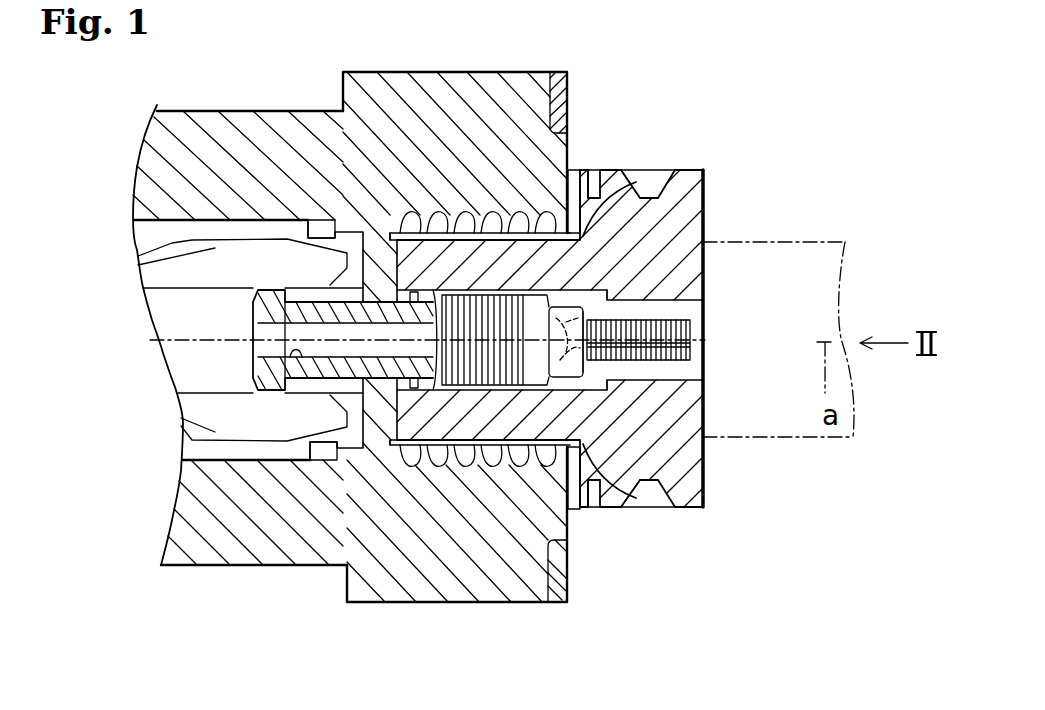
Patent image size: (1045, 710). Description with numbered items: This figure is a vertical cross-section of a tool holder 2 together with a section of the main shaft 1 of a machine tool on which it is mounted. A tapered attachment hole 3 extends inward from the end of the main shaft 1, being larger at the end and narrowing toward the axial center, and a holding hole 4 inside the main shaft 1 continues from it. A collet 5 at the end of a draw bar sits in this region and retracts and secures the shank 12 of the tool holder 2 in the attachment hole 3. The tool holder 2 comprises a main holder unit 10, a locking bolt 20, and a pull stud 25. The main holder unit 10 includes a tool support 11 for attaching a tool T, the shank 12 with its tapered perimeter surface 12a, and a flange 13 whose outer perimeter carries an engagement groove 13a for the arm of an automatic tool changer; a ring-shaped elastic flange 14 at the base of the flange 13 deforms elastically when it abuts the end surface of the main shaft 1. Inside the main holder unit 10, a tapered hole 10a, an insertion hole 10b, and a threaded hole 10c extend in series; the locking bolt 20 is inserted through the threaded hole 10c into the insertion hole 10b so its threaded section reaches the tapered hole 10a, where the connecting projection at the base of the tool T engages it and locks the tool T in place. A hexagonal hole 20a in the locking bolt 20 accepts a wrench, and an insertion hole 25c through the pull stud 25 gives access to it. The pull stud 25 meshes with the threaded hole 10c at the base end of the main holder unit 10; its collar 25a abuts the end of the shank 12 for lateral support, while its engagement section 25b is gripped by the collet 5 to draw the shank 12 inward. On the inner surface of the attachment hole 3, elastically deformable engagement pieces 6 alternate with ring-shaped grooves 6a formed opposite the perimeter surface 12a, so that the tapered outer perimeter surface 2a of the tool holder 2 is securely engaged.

The main shaft 1 is at (274, 110).
The tool holder 2 is at (758, 180).
The tapered outer perimeter surface 2a is at (632, 178).
The attachment hole 3 is at (479, 468).
The holding hole 4 is at (176, 223).
The collet 5 is at (138, 251).
The elastic engagement pieces 6 is at (425, 224).
The ring-shaped grooves 6a is at (458, 250).
The main holder unit 10 is at (710, 170).
The tapered hole 10a is at (660, 300).
The insertion hole 10b is at (606, 300).
The threaded hole 10c is at (560, 281).
The tool support 11 is at (708, 405).
The shank 12 is at (421, 466).
The tapered perimeter surface 12a is at (569, 512).
The flange 13 is at (686, 508).
The engagement groove 13a is at (649, 482).
The ring-shaped elastic flange 14 is at (579, 168).
The locking bolt 20 is at (708, 334).
The hexagonal hole 20a is at (567, 383).
The pull stud 25 is at (283, 392).
The collar 25a is at (377, 462).
The engagement section 25b is at (192, 440).
The insertion hole 25c is at (298, 360).
The tool T is at (847, 297).